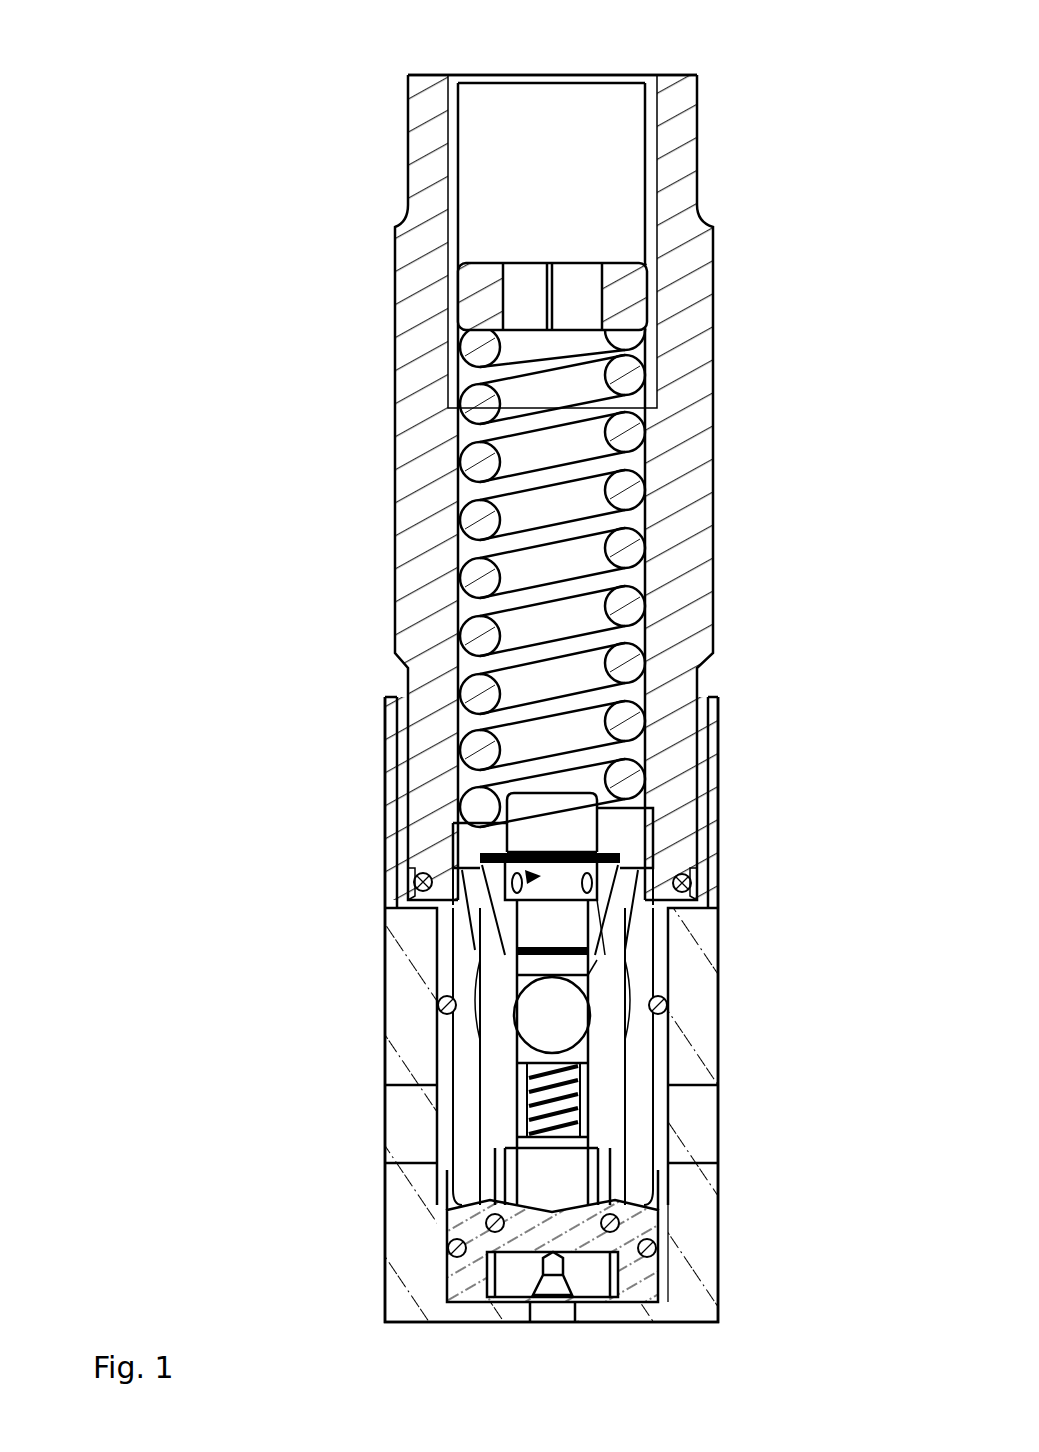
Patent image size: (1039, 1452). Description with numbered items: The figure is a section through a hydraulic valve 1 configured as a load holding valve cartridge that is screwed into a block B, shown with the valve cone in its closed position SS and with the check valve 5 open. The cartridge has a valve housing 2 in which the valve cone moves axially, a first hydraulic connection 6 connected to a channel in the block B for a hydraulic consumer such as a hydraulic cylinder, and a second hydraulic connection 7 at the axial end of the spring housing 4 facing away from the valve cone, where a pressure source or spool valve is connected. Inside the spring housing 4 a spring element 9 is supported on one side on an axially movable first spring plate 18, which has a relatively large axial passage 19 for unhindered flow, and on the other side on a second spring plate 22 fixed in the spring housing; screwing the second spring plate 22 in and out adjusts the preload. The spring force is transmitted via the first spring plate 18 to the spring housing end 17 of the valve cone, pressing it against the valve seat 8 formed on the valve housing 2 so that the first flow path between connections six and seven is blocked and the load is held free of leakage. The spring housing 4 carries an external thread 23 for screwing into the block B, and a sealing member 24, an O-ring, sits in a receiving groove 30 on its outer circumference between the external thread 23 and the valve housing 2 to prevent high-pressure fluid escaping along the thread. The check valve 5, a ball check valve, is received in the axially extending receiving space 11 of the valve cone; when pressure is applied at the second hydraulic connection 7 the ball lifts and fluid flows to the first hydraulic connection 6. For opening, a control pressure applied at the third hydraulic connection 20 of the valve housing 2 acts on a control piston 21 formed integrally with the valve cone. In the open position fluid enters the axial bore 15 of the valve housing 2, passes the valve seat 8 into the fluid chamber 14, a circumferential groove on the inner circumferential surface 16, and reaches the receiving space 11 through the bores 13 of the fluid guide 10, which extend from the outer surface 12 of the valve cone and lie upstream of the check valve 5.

The hydraulic valve 1 is at (300, 298).
The valve housing 2 is at (637, 1143).
The spring housing 4 is at (685, 185).
The check valve 5 is at (600, 1038).
The first hydraulic connection 6 is at (470, 1073).
The second hydraulic connection 7 is at (572, 120).
The valve seat 8 is at (610, 905).
The spring element 9 is at (470, 400).
The fluid guide 10 is at (490, 855).
The receiving space 11 is at (632, 940).
The outer surface 12 is at (478, 906).
The bores 13 is at (640, 927).
The fluid chamber 14 is at (633, 937).
The axial bore 15 is at (615, 1082).
The inner circumferential surface 16 is at (490, 1022).
The spring housing end 17 is at (560, 848).
The first spring plate 18 is at (470, 817).
The axial passage 19 is at (552, 808).
The third hydraulic connection 20 is at (552, 1298).
The control piston 21 is at (588, 1283).
The second spring plate 22 is at (485, 275).
The external thread 23 is at (400, 745).
The sealing member 24 is at (413, 887).
The receiving groove 30 is at (678, 873).
The block B is at (690, 1243).
The closed position SS is at (857, 692).